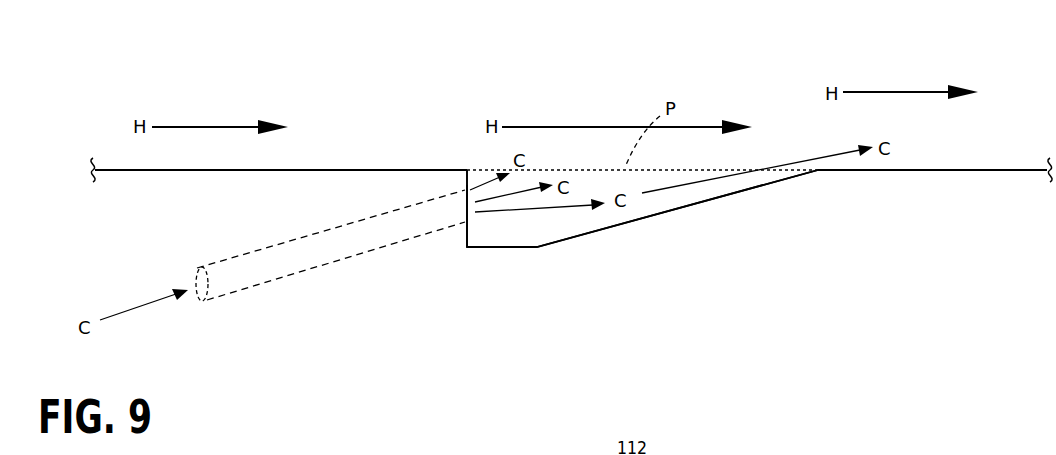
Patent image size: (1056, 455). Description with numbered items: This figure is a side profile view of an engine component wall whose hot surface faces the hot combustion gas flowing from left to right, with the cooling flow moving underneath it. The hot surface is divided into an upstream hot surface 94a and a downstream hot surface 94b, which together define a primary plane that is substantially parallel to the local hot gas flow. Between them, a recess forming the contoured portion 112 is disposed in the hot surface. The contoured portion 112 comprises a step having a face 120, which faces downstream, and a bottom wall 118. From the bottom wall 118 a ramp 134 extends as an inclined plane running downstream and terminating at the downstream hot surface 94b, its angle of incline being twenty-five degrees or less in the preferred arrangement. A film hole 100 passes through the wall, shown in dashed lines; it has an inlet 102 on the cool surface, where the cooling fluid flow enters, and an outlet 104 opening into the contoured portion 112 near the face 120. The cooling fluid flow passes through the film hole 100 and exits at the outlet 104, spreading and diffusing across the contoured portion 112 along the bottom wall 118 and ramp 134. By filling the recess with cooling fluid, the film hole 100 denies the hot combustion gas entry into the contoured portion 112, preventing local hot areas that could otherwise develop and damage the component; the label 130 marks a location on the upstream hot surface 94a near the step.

The upstream hot surface 94a is at (128, 170).
The downstream hot surface 94b is at (915, 170).
The film hole 100 is at (258, 250).
The inlet 102 is at (195, 307).
The outlet 104 is at (462, 208).
The contoured portion 112 is at (803, 75).
The bottom wall 118 is at (497, 248).
The face 120 is at (468, 176).
The upstream edge 130 is at (300, 162).
The ramp 134 is at (675, 210).